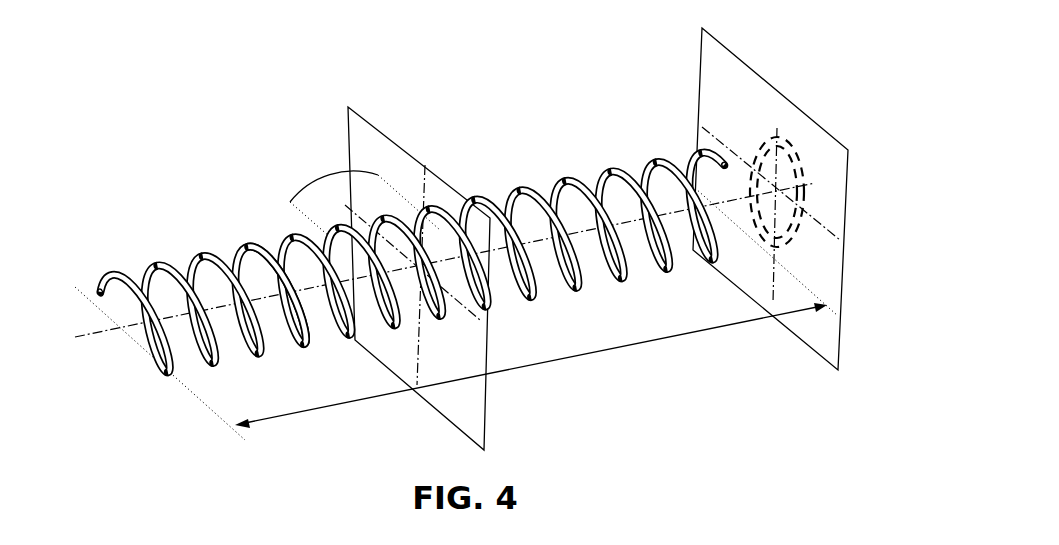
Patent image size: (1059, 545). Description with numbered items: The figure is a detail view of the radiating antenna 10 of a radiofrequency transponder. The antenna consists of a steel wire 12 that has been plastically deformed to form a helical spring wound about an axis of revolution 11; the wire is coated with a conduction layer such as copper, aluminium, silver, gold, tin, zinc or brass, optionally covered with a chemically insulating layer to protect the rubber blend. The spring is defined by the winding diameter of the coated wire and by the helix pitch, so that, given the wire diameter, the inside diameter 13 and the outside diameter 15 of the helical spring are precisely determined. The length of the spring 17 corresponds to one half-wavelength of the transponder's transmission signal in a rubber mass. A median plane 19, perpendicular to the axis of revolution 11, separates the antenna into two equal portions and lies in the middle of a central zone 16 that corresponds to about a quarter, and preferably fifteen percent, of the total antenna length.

The radiating antenna 10 is at (482, 162).
The axis of revolution 11 is at (105, 353).
The steel wire 12 is at (265, 240).
The inside diameter 13 is at (742, 141).
The outside diameter 15 is at (773, 128).
The central zone 16 is at (322, 177).
The length of the spring 17 is at (697, 346).
The median plane 19 is at (500, 424).